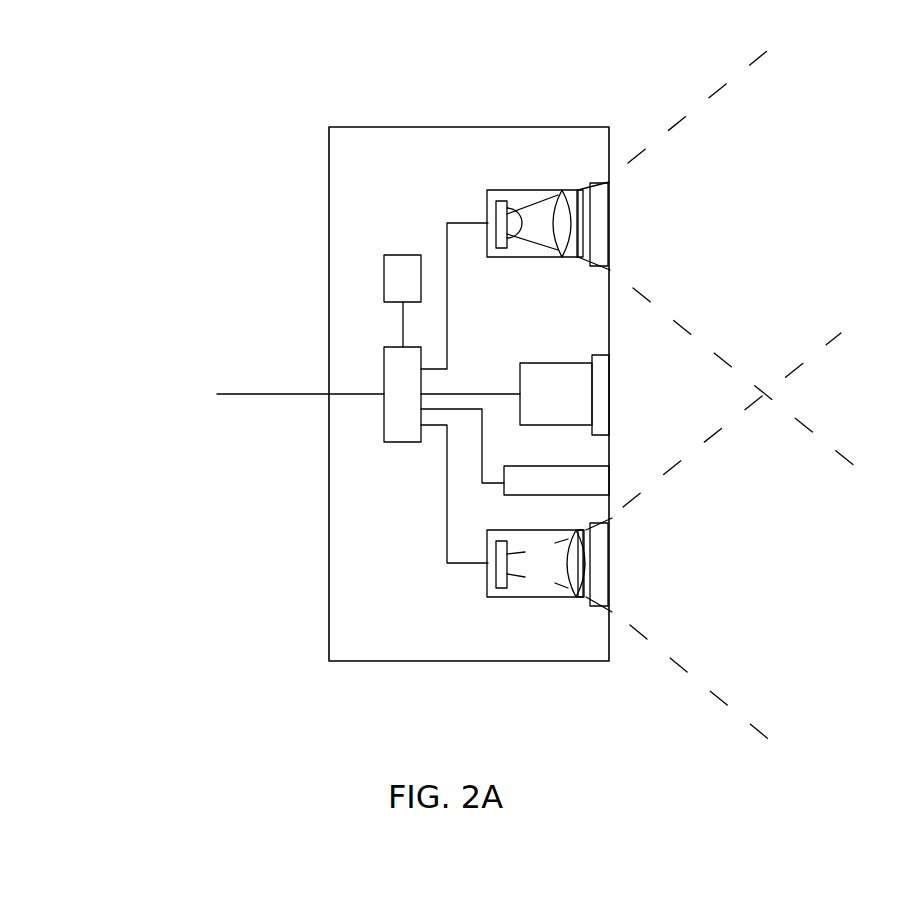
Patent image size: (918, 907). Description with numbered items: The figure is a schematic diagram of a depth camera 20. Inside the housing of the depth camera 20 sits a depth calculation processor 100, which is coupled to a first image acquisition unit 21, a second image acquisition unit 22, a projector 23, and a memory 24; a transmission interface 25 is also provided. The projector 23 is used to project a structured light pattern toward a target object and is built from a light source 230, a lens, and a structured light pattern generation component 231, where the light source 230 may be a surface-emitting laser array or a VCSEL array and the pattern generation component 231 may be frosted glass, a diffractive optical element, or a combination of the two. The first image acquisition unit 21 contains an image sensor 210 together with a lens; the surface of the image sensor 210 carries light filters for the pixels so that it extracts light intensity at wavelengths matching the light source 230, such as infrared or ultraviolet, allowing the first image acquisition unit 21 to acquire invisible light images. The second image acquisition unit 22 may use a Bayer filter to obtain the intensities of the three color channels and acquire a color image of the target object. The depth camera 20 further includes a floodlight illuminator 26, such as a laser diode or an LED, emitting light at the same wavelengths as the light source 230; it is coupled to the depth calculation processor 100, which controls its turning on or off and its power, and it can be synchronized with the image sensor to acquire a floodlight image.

The depth camera 20 is at (322, 330).
The first image acquisition unit 21 is at (522, 597).
The image sensor 210 is at (503, 563).
The second image acquisition unit 22 is at (573, 425).
The projector 23 is at (550, 190).
The light source 230 is at (496, 214).
The structured light pattern generation component 231 is at (583, 190).
The memory 24 is at (400, 254).
The transmission interface 25 is at (300, 380).
The floodlight illuminator 26 is at (540, 488).
The depth calculation processor 100 is at (383, 370).